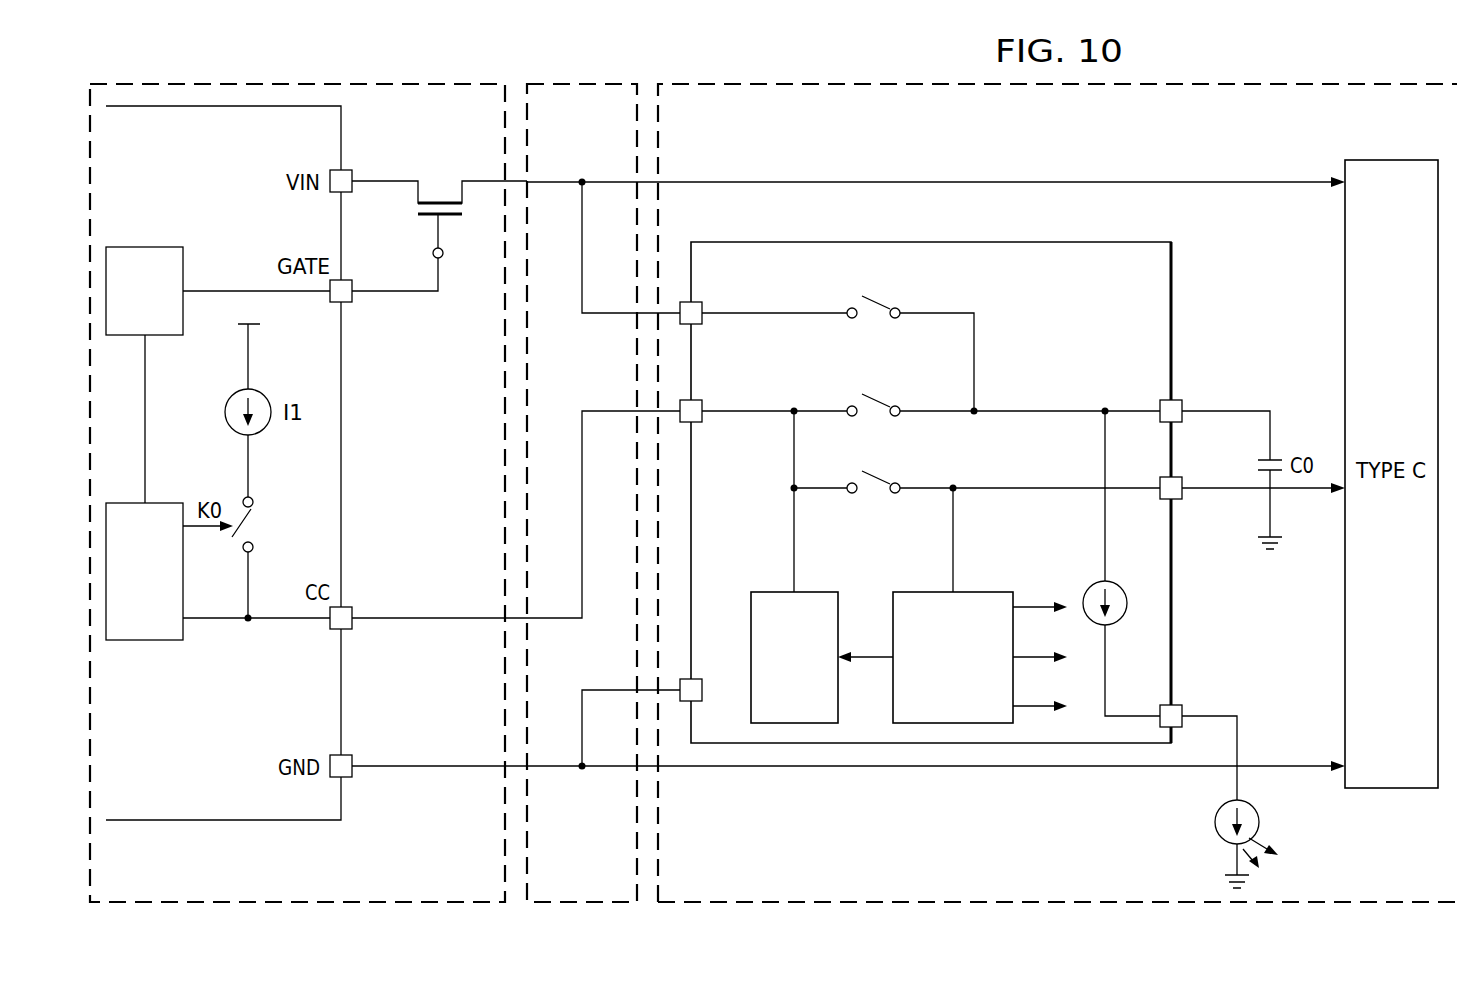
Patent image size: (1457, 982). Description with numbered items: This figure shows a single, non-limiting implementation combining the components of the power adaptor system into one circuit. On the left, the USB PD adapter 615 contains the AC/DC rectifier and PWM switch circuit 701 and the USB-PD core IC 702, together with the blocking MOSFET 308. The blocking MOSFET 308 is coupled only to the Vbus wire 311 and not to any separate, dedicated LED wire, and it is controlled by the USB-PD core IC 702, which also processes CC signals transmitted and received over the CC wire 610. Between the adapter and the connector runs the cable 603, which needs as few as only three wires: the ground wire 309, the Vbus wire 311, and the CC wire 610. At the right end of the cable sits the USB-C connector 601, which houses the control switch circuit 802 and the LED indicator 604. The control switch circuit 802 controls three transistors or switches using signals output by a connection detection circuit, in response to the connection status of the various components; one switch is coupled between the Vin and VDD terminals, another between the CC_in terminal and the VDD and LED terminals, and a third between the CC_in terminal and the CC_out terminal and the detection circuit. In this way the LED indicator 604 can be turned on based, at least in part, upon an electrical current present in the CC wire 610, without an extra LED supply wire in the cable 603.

The USB PD adapter 615 is at (203, 76).
The cable 603 is at (551, 76).
The USB-C connector 601 is at (1300, 76).
The Vbus wire 311 is at (800, 180).
The blocking MOSFET 308 is at (427, 218).
The control switch circuit 802 is at (1183, 314).
The CC wire 610 is at (598, 410).
The ground wire 309 is at (598, 688).
The LED indicator 604 is at (1215, 820).
The AC/DC rectifier and PWM switch circuit 701 is at (164, 305).
The USB-PD core IC 702 is at (164, 589).